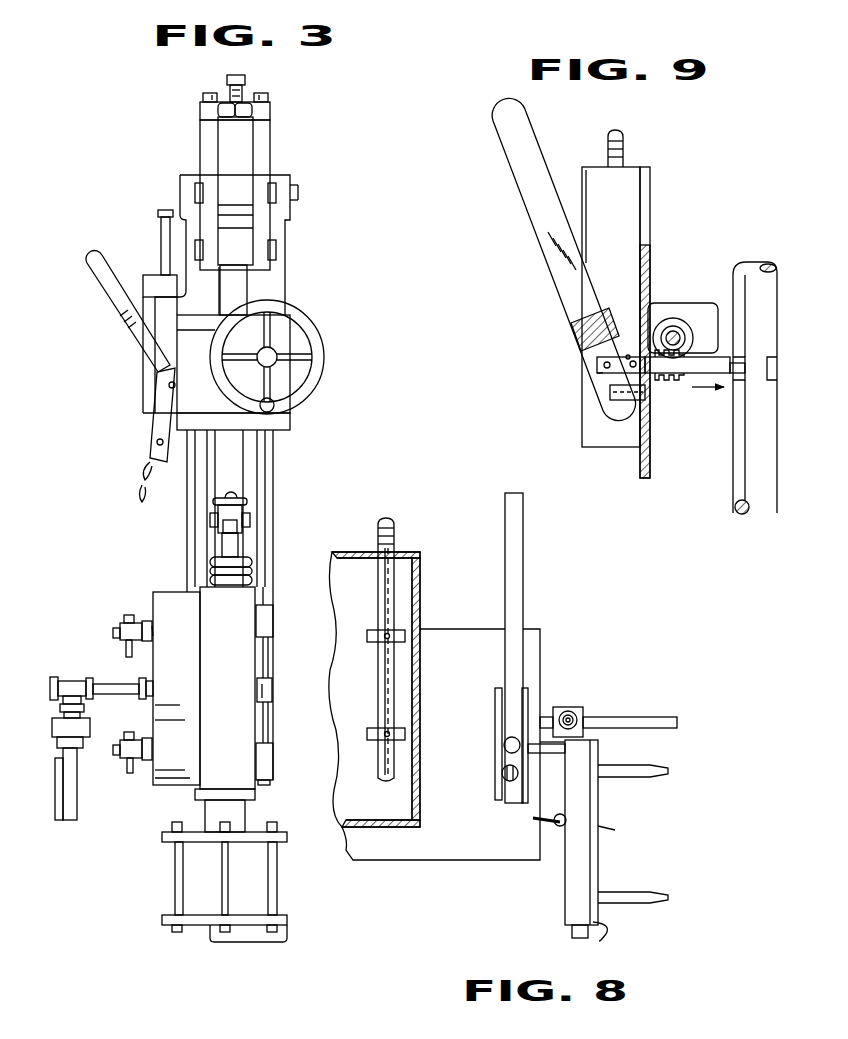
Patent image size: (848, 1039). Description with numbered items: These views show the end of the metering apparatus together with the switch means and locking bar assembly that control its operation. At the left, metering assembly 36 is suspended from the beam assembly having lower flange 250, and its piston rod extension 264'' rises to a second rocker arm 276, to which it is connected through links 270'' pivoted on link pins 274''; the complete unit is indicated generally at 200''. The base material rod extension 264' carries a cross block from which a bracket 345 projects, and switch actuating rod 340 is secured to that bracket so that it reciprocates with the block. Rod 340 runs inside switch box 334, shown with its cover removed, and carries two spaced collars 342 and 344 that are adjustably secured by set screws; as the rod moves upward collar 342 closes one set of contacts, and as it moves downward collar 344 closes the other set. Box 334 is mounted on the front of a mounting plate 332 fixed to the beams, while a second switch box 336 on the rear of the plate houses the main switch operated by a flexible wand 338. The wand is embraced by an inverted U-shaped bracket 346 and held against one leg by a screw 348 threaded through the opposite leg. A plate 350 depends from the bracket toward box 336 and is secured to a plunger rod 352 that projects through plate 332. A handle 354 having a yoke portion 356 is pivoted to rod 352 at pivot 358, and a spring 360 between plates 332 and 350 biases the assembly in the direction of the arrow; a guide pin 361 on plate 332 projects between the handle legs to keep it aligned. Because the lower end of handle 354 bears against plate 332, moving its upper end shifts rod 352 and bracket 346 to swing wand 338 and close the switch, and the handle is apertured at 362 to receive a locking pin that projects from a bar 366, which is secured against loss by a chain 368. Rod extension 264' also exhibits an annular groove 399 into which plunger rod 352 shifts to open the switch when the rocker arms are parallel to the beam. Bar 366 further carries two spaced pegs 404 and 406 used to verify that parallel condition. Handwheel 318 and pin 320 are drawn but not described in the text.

In FIG. 3, the rocker arm 276 is at (238, 157).
In FIG. 3, the links 270'' is at (201, 245).
In FIG. 3, the link pins 274'' is at (274, 220).
In FIG. 3, the piston rod extension member 264'' is at (282, 290).
In FIG. 3, the bracket 345 is at (163, 232).
In FIG. 3, the switch actuating rod 340 is at (167, 252).
In FIG. 9, the switch actuating rod 340 is at (620, 158).
In FIG. 8, the switch actuating rod 340 is at (393, 547).
In FIG. 3, the switch box 334 is at (150, 292).
In FIG. 9, the switch box 334 is at (602, 177).
In FIG. 8, the switch box 334 is at (390, 808).
In FIG. 3, the handle 354 is at (112, 290).
In FIG. 9, the handle 354 is at (528, 183).
In FIG. 8, the handle 354 is at (513, 572).
In FIG. 3, the handwheel 318 is at (308, 382).
In FIG. 3, the pin 320 is at (274, 405).
In FIG. 3, the lower flange 250 is at (283, 422).
In FIG. 3, the metering assembly 36 is at (245, 694).
In FIG. 3, the frame assembly 200'' is at (193, 865).
In FIG. 9, the annular groove 399 is at (731, 300).
In FIG. 9, the flexible actuating arm or wand 338 is at (672, 330).
In FIG. 8, the flexible actuating arm or wand 338 is at (663, 707).
In FIG. 9, the switch box 336 is at (700, 320).
In FIG. 9, the aperture 362 is at (628, 355).
In FIG. 9, the plunger rod 352 is at (595, 362).
In FIG. 8, the plunger rod 352 is at (506, 742).
In FIG. 9, the pivot 358 is at (603, 372).
In FIG. 9, the guide pin 361 is at (615, 392).
In FIG. 8, the guide pin 361 is at (512, 781).
In FIG. 9, the spring 360 is at (663, 378).
In FIG. 9, the plate 350 is at (680, 378).
In FIG. 8, the plate 350 is at (557, 755).
In FIG. 9, the mounting plate 332 is at (649, 460).
In FIG. 8, the mounting plate 332 is at (462, 642).
In FIG. 9, the piston rod extension 264' is at (690, 506).
In FIG. 8, the collar 342 is at (373, 635).
In FIG. 8, the collar 344 is at (373, 735).
In FIG. 8, the screw 348 is at (568, 713).
In FIG. 8, the bracket 346 is at (577, 707).
In FIG. 8, the peg 404 is at (643, 770).
In FIG. 8, the peg 406 is at (640, 897).
In FIG. 8, the yoke portion 356 is at (500, 793).
In FIG. 8, the chain 368 is at (562, 832).
In FIG. 8, the bar 366 is at (573, 900).